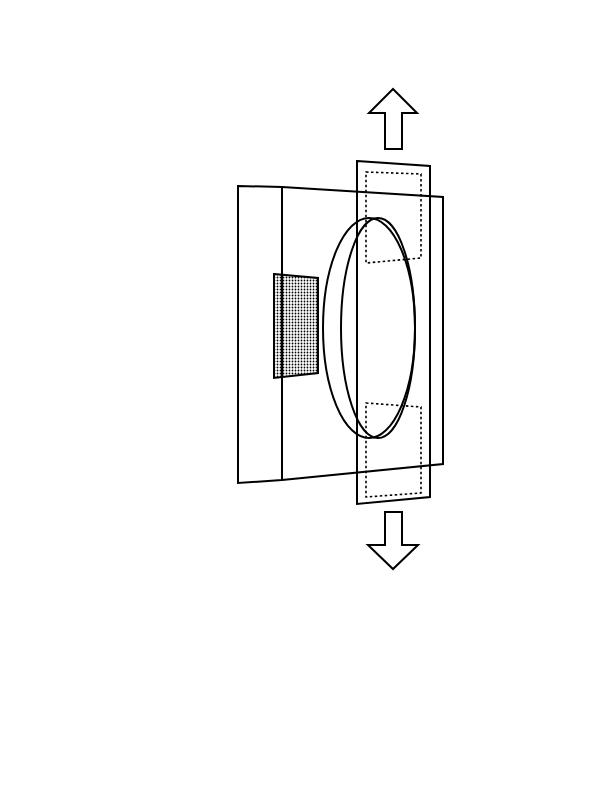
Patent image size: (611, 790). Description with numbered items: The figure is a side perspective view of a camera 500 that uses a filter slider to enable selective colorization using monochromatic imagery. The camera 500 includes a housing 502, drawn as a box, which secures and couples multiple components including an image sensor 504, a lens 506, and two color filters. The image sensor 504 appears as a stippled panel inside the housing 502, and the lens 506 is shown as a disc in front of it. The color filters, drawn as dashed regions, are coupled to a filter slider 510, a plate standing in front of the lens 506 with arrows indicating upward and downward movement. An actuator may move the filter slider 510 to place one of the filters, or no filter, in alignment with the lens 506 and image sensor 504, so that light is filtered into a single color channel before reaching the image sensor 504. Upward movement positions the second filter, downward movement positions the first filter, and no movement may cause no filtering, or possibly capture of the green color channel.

The camera 500 is at (186, 72).
The housing 502 is at (262, 187).
The image sensor 504 is at (273, 303).
The lens 506 is at (338, 423).
The filter slider 510 is at (430, 175).